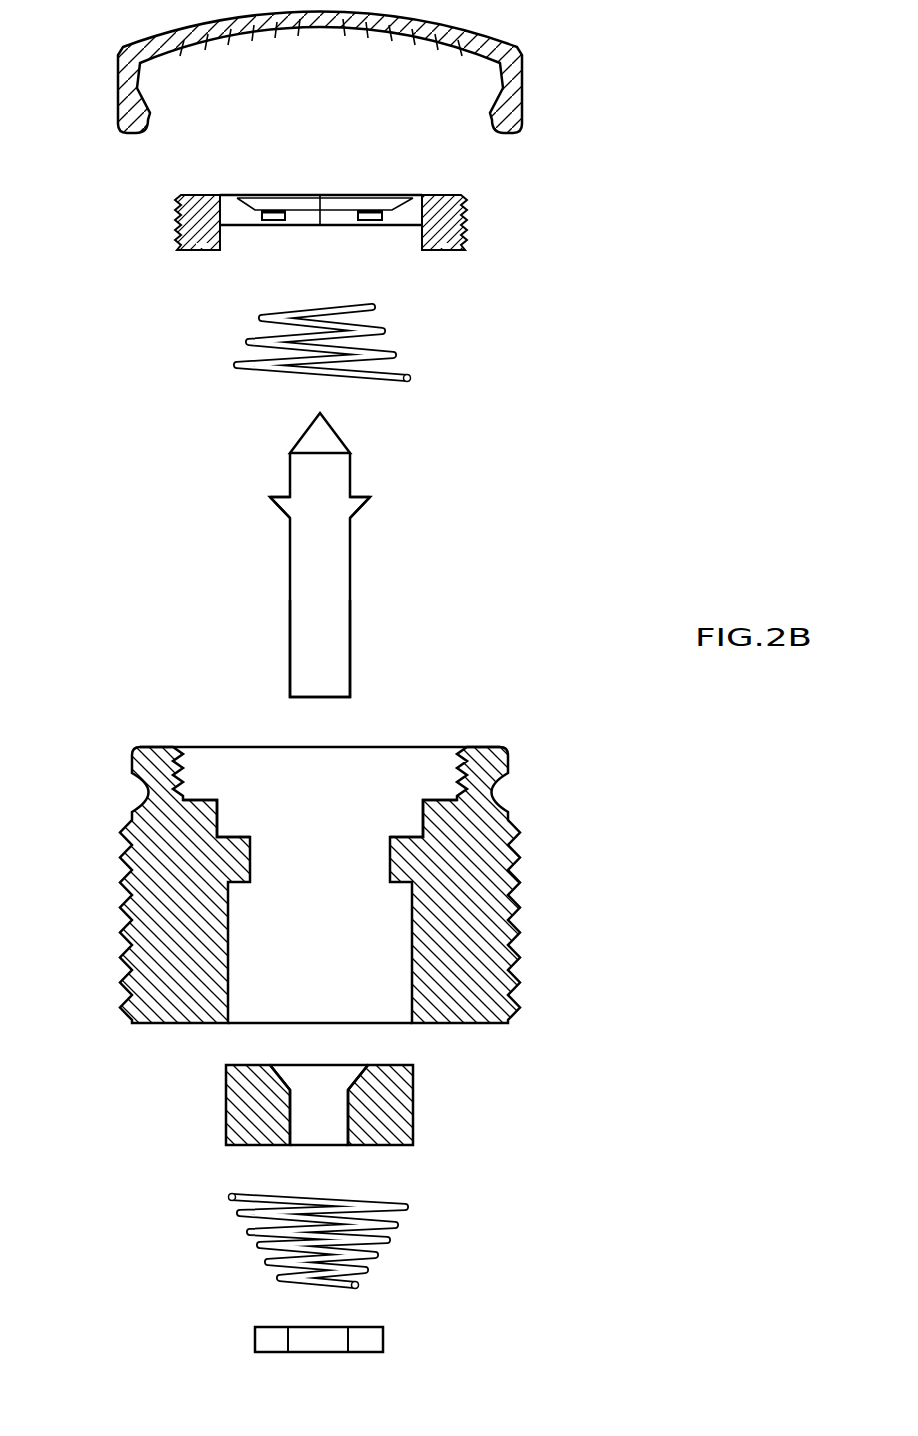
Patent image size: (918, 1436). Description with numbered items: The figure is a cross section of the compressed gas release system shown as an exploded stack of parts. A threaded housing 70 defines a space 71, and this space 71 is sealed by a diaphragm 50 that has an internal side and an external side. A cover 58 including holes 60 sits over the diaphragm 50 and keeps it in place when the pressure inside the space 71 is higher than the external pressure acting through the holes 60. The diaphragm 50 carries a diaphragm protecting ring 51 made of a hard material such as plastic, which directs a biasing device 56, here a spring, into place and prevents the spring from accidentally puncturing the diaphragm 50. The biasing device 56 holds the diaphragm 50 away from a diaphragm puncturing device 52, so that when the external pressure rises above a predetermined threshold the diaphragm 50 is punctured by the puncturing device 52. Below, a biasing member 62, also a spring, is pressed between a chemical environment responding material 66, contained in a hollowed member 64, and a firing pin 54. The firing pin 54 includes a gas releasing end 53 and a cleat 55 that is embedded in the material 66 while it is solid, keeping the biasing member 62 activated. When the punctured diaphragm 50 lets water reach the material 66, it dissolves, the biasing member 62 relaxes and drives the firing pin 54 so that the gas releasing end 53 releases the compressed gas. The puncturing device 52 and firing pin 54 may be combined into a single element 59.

The diaphragm 50 is at (466, 222).
The diaphragm protecting ring 51 is at (370, 225).
The diaphragm puncturing device 52 is at (323, 414).
The gas releasing end 53 is at (257, 1342).
The firing pin 54 is at (317, 420).
The cleat 55 is at (278, 506).
The biasing device 56 is at (384, 330).
The cover 58 is at (518, 121).
The single element 59 is at (342, 662).
The holes 60 is at (272, 32).
The biasing member 62 is at (240, 1220).
The hollowed member 64 is at (270, 1095).
The chemical environment responding material 66 is at (228, 1066).
The housing 70 is at (275, 856).
The space 71 is at (250, 772).